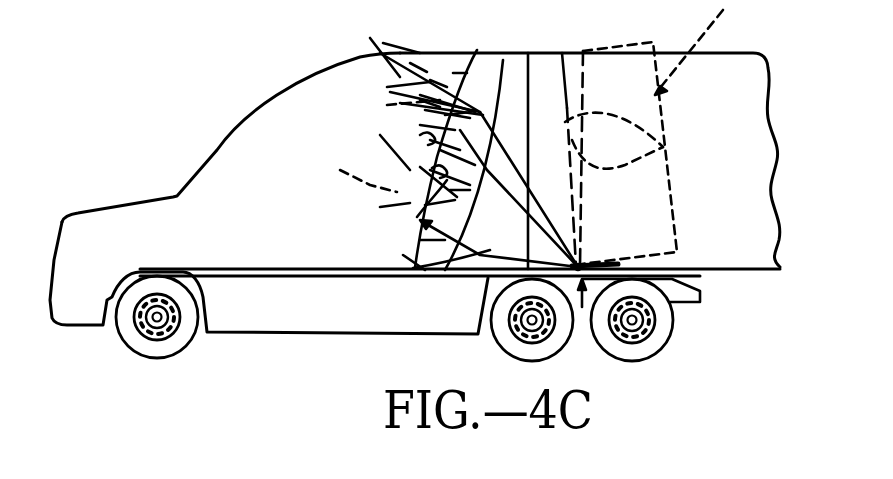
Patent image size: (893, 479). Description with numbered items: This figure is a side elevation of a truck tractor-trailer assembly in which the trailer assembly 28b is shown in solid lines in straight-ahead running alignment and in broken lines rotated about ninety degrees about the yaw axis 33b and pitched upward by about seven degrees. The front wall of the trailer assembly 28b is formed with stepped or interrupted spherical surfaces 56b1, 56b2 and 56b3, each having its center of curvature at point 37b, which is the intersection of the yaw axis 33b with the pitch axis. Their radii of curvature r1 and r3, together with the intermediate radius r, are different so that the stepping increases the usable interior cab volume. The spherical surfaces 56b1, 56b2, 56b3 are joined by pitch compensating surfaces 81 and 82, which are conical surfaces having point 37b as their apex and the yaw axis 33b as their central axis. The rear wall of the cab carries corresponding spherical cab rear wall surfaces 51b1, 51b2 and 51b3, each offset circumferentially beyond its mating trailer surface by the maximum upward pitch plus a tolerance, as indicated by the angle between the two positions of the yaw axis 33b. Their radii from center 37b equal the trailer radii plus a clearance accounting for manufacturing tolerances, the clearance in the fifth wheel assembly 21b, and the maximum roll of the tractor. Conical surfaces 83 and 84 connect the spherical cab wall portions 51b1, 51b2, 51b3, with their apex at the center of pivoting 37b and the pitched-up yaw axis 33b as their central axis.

The fifth wheel assembly 21b is at (582, 307).
The trailer assembly 28b is at (735, 55).
The yaw axis 33b is at (662, 142).
The intersection point 37b is at (582, 266).
The spherical cab rear wall surface 51b1 is at (370, 38).
The spherical cab rear wall surface 51b2 is at (380, 135).
The spherical cab wall surface 51b3 is at (403, 255).
The trailer front wall spherical surface 56b1 is at (477, 50).
The trailer front wall spherical surface 56b2 is at (503, 60).
The trailer front wall spherical surface 56b3 is at (417, 217).
The pitch compensating surface 81 is at (387, 87).
The pitch compensating surface 82 is at (380, 207).
The conical surface 83 is at (387, 105).
The conical surface 84 is at (340, 170).
The radius r is at (519, 198).
The radius of curvature r1 is at (529, 189).
The radius of curvature r3 is at (499, 243).